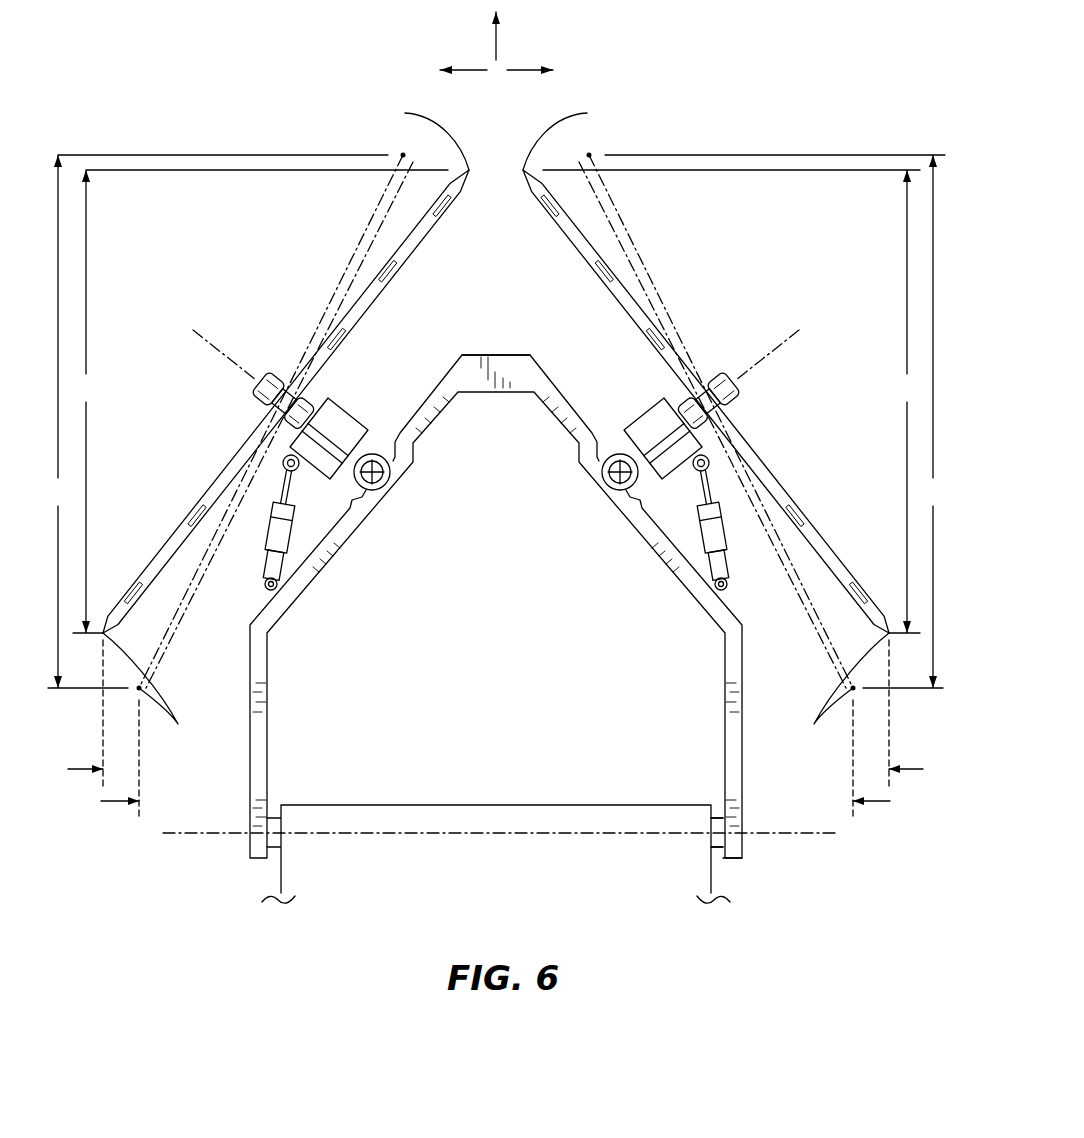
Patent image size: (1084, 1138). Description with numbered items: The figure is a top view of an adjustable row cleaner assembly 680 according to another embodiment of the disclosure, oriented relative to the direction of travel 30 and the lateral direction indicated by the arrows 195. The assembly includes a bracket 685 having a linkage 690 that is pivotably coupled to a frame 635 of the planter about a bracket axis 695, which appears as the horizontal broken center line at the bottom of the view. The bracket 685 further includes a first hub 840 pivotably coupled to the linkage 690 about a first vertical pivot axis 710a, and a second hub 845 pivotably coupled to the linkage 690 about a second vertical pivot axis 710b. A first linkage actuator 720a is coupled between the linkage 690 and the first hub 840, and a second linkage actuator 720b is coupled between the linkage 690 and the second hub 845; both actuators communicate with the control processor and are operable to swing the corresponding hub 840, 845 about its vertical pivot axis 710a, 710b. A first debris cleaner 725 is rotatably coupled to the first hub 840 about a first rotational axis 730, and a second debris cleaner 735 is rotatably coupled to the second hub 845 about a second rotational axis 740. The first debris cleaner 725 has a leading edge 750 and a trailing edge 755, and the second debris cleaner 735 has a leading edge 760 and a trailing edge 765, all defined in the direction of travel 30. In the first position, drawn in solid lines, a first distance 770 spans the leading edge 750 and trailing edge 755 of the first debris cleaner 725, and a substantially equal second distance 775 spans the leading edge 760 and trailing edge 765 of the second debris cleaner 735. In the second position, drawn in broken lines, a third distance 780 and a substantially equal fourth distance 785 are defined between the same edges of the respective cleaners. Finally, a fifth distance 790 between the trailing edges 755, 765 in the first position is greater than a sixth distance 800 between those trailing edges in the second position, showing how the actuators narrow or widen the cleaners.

The direction of travel 30 is at (497, 47).
The lateral direction arrows 195 is at (522, 72).
The frame 635 is at (470, 805).
The adjustable row cleaner assembly 680 is at (724, 104).
The bracket 685 is at (752, 884).
The linkage 690 is at (722, 683).
The bracket axis 695 is at (776, 832).
The first vertical pivot axis 710a is at (610, 454).
The second vertical pivot axis 710b is at (382, 454).
The first linkage actuator 720a is at (712, 552).
The second linkage actuator 720b is at (280, 552).
The first debris cleaner 725 is at (760, 478).
The first rotational axis 730 is at (770, 353).
The second debris cleaner 735 is at (232, 478).
The second rotational axis 740 is at (222, 353).
The leading edge 750 is at (589, 155).
The trailing edge 755 is at (835, 692).
The leading edge 760 is at (403, 155).
The trailing edge 765 is at (156, 692).
The first distance 770 is at (732, 401).
The second distance 775 is at (259, 401).
The third distance 780 is at (777, 421).
The fourth distance 785 is at (215, 421).
The fifth distance 790 is at (912, 769).
The sixth distance 800 is at (870, 801).
The first hub 840 is at (672, 480).
The second hub 845 is at (320, 480).